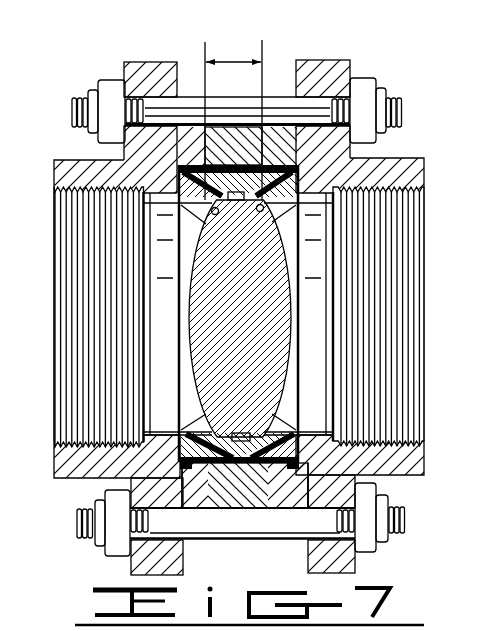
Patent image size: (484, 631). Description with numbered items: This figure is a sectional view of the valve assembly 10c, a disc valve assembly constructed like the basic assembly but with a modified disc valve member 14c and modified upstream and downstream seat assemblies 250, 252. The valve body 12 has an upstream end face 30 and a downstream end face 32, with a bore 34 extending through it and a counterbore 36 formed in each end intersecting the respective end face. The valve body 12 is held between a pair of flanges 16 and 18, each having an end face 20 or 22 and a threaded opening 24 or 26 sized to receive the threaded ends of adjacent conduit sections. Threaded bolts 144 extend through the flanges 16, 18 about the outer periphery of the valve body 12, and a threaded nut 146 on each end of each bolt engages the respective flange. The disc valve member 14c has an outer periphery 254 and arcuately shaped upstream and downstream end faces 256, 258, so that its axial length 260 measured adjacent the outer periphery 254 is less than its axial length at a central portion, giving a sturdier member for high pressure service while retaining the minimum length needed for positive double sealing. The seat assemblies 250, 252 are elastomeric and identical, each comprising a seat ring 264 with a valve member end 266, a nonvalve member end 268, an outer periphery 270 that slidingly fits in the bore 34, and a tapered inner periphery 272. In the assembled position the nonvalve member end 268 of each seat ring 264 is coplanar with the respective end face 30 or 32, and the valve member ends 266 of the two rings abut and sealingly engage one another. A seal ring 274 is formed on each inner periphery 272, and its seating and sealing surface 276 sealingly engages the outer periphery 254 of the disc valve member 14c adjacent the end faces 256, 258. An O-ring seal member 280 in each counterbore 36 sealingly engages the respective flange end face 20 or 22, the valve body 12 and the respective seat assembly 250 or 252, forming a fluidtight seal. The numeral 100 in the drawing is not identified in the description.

The valve assembly 10c is at (352, 57).
The threaded nut 146 is at (105, 108).
The threaded bolt 144 is at (76, 120).
The counterbore 36 is at (190, 117).
The bore 34 is at (200, 124).
The axial length 260 is at (233, 113).
The upstream end face 30 is at (170, 145).
The downstream end face 32 is at (357, 147).
The outer periphery 254 is at (233, 146).
The seal ring 274 is at (180, 176).
The seating and sealing surface 276 is at (150, 227).
The upstream end face 256 is at (212, 252).
The downstream end face 258 is at (288, 240).
The disc valve member 14c is at (262, 308).
The inner periphery 272 is at (178, 417).
The upstream seat assembly 250 is at (182, 433).
The downstream seat assembly 252 is at (309, 410).
The seat ring 264 is at (207, 440).
The valve member end 266 is at (246, 430).
The threaded opening 24 is at (77, 440).
The threaded opening 26 is at (402, 443).
The nonvalve member end 268 is at (180, 458).
The O-ring seal member 280 is at (182, 488).
The outer periphery 270 is at (193, 520).
The valve body 12 is at (231, 537).
The end face 20 is at (184, 562).
The end face 22 is at (304, 557).
The flange 18 is at (345, 565).
The flange 16 is at (147, 565).
The sheet reference 100 is at (440, 630).